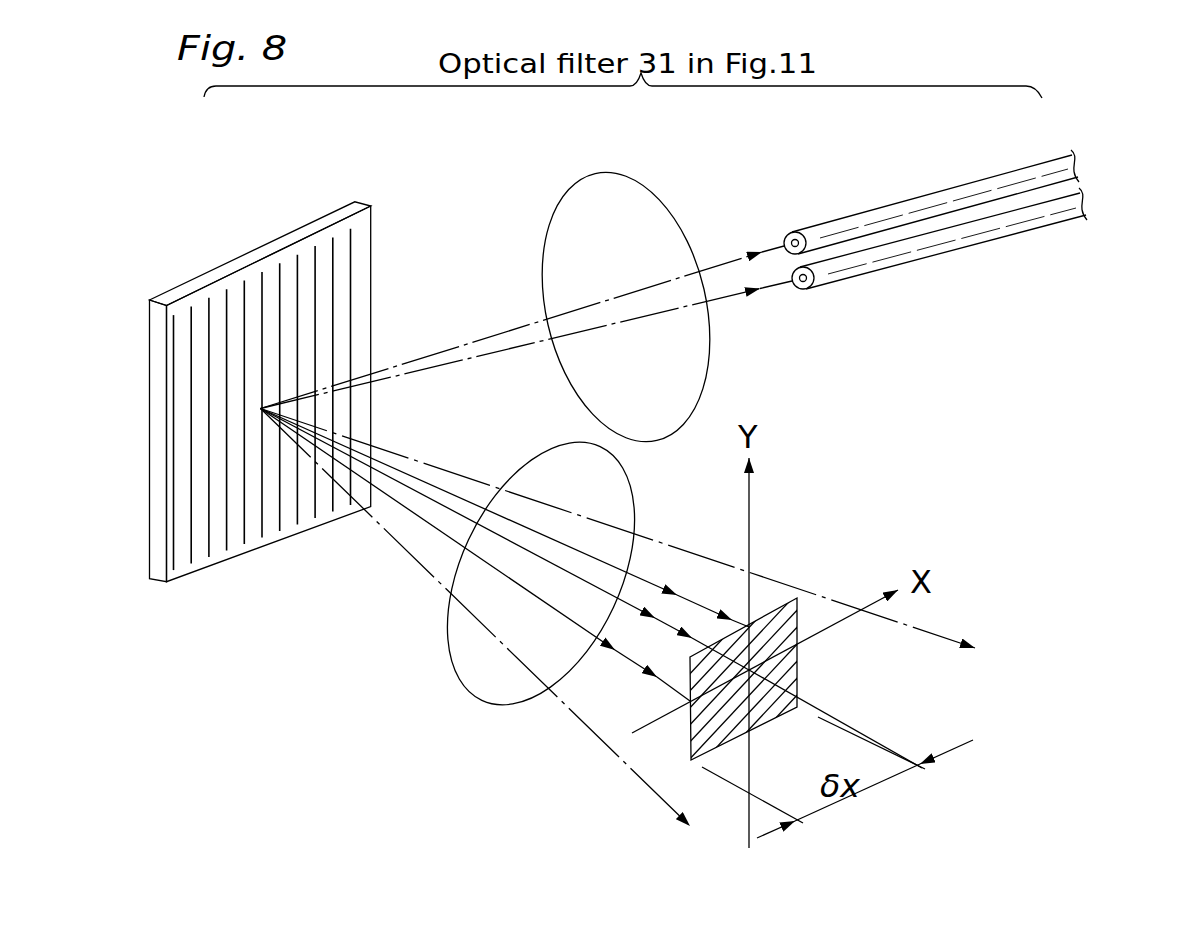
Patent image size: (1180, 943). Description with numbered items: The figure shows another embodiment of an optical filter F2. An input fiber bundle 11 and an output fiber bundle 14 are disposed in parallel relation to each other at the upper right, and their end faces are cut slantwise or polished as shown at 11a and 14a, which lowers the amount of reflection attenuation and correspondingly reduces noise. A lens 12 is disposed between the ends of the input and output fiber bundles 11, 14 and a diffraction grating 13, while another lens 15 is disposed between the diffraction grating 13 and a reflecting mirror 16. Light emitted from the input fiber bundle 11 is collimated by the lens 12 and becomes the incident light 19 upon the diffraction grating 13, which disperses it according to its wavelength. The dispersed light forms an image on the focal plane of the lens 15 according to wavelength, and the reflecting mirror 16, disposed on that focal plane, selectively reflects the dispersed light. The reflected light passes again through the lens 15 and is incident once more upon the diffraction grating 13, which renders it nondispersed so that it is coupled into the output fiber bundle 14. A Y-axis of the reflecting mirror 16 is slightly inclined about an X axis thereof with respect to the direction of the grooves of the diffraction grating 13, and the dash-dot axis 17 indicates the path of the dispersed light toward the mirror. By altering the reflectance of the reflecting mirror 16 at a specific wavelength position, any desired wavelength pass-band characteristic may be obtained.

The input fiber bundle 11 is at (927, 200).
The end face of input fiber bundle 11a is at (793, 232).
The lens 12 is at (636, 180).
The diffraction grating 13 is at (243, 254).
The output fiber bundle 14 is at (1042, 220).
The end face of output fiber bundle 14a is at (803, 290).
The lens 15 is at (460, 687).
The reflecting mirror 16 is at (800, 618).
The optical axis 17 is at (903, 627).
The incident light 19 is at (758, 250).
The optical filter F2 is at (1112, 136).